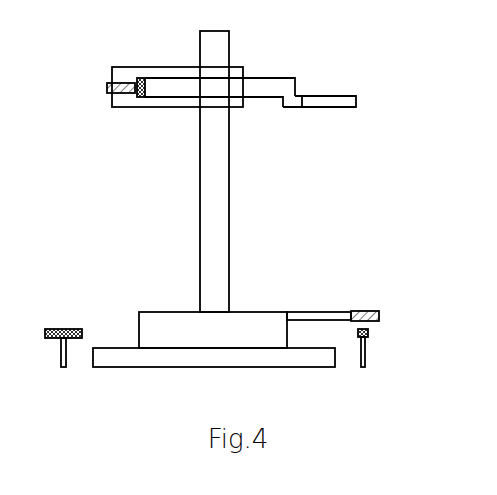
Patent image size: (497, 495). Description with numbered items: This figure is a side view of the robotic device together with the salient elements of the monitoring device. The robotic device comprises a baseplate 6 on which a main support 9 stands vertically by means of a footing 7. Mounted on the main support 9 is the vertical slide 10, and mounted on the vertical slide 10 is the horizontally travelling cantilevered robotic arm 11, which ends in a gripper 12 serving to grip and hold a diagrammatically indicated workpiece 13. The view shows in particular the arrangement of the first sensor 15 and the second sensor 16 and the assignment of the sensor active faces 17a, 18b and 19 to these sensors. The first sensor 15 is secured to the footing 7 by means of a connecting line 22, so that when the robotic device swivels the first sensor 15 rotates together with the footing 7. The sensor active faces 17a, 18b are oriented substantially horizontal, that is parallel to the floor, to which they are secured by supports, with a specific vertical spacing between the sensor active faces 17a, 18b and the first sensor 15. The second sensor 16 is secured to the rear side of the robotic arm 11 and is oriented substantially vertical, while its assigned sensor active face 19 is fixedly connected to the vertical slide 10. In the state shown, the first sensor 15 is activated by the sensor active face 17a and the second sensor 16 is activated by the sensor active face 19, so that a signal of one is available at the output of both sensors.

The baseplate 6 is at (307, 360).
The footing 7 is at (253, 320).
The main support 9 is at (207, 187).
The vertical slide 10 is at (173, 72).
The robotic arm 11 is at (267, 83).
The gripper 12 is at (289, 105).
The workpiece 13 is at (329, 102).
The first sensor 15 is at (367, 315).
The second sensor 16 is at (106, 87).
The sensor active face 17a is at (370, 333).
The sensor active face 18b is at (55, 328).
The sensor active face 19 is at (138, 77).
The connecting line 22 is at (312, 313).